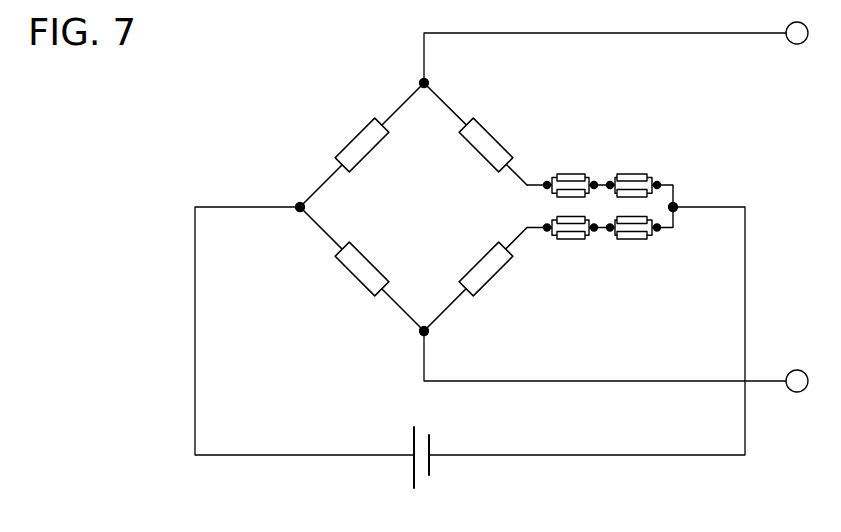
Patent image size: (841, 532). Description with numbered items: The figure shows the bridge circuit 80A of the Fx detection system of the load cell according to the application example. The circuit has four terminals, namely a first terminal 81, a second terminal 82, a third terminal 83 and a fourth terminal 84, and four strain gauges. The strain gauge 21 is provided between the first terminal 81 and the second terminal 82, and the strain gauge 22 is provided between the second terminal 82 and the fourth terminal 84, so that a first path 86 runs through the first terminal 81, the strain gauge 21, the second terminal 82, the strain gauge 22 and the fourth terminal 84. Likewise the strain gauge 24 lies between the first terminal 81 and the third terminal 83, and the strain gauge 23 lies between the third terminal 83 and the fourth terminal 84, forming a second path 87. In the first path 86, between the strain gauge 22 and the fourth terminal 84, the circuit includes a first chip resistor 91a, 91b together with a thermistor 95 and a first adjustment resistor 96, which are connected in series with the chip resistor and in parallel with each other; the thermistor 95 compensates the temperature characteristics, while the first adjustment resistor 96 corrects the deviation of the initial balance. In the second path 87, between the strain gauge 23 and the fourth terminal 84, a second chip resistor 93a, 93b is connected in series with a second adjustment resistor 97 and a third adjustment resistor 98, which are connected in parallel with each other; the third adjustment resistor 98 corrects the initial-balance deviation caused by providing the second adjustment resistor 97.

The bridge circuit 80A is at (218, 106).
The strain gauge 21 is at (497, 140).
The strain gauge 22 is at (354, 140).
The strain gauge 23 is at (352, 270).
The strain gauge 24 is at (500, 270).
The first terminal 81 is at (298, 205).
The second terminal 82 is at (423, 80).
The third terminal 83 is at (427, 337).
The fourth terminal 84 is at (676, 204).
The first path 86 is at (396, 104).
The second path 87 is at (394, 310).
The first chip resistor 91a is at (638, 173).
The first chip resistor 91b is at (643, 198).
The second chip resistor 93a is at (645, 217).
The second chip resistor 93b is at (640, 242).
The thermistor 95 is at (578, 173).
The first adjustment resistor 96 is at (566, 197).
The second adjustment resistor 97 is at (570, 216).
The third adjustment resistor 98 is at (578, 242).